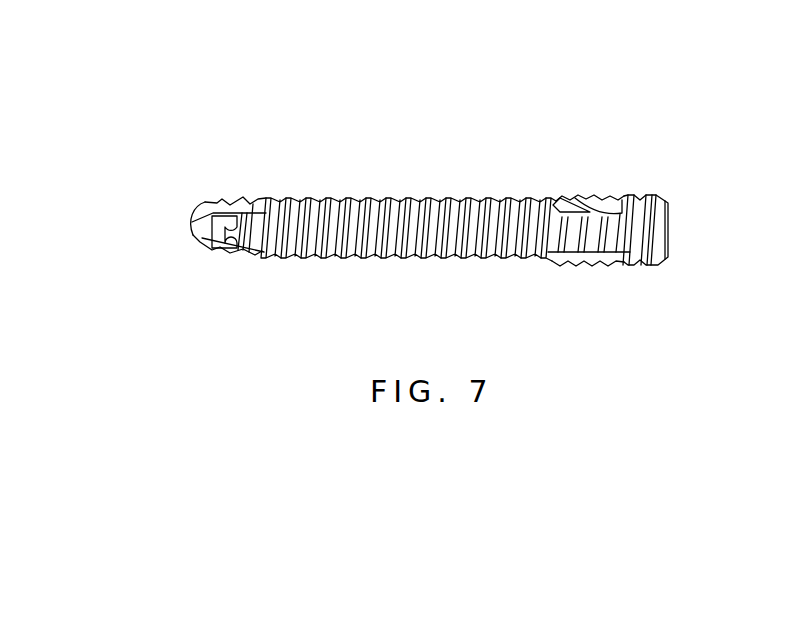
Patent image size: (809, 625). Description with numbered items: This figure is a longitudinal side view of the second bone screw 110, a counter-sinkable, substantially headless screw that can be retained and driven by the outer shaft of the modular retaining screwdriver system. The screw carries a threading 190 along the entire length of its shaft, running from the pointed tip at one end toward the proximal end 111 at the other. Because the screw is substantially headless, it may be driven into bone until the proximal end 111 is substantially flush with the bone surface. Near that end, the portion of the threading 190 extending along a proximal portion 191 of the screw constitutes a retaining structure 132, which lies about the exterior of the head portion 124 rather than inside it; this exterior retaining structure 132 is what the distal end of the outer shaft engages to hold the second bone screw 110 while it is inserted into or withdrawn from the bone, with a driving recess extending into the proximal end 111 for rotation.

The second bone screw 110 is at (346, 138).
The threading 190 is at (505, 222).
The retaining structure 132 is at (575, 197).
The head portion 124 is at (637, 193).
The proximal end 111 is at (670, 220).
The proximal portion 191 is at (582, 265).